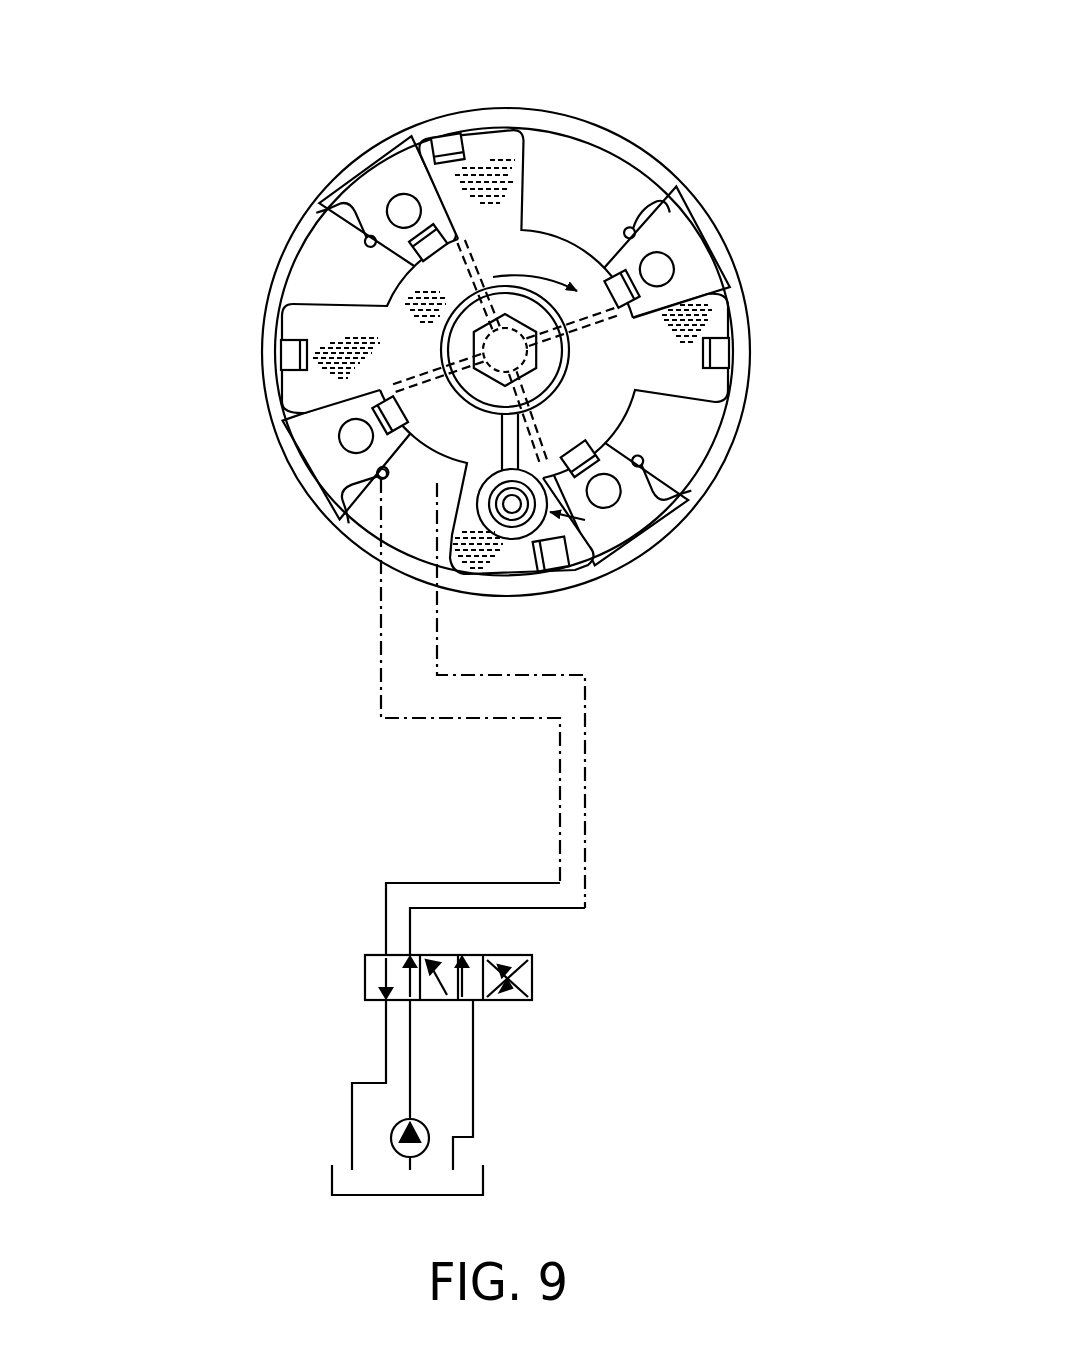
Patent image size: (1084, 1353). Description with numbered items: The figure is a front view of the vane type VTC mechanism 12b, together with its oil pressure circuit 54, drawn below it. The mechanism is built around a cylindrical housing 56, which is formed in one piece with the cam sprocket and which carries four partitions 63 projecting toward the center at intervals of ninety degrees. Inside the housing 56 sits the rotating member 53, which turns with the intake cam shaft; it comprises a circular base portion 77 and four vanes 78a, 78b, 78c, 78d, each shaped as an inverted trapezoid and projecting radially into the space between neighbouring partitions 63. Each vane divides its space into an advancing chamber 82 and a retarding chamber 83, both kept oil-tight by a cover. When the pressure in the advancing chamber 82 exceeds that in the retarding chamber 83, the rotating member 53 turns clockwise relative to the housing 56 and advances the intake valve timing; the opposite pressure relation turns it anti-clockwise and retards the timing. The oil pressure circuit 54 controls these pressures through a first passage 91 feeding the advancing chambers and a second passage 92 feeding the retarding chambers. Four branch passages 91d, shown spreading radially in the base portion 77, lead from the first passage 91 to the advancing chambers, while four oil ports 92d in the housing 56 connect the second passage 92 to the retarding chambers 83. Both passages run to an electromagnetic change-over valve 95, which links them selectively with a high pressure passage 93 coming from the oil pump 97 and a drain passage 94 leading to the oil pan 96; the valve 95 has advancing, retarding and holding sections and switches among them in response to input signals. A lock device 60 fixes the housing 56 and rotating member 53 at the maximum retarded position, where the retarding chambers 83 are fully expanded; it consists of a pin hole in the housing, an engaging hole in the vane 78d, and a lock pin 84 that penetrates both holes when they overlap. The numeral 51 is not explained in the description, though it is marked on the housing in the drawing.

The VTC mechanism 12b is at (720, 66).
The housing 51 is at (598, 112).
The rotating member 53 is at (638, 403).
The oil pressure circuit 54 is at (592, 880).
The housing 56 is at (633, 143).
The lock device 60 is at (585, 520).
The partitions 63 is at (370, 217).
The base portion 77 is at (382, 478).
The vane 78a is at (310, 385).
The vane 78b is at (512, 177).
The vane 78c is at (703, 395).
The vane 78d is at (480, 575).
The advancing chamber 82 is at (425, 158).
The retarding chamber 83 is at (352, 273).
The lock pin 84 is at (518, 543).
The first passage 91 is at (587, 778).
The branch passages 91d is at (445, 272).
The second passage 92 is at (558, 778).
The oil ports 92d is at (648, 205).
The high pressure passage 93 is at (412, 1052).
The drain passage 94 is at (386, 1046).
The electromagnetic change-over valve 95 is at (447, 955).
The oil pan 96 is at (332, 1182).
The oil pump 97 is at (423, 1120).